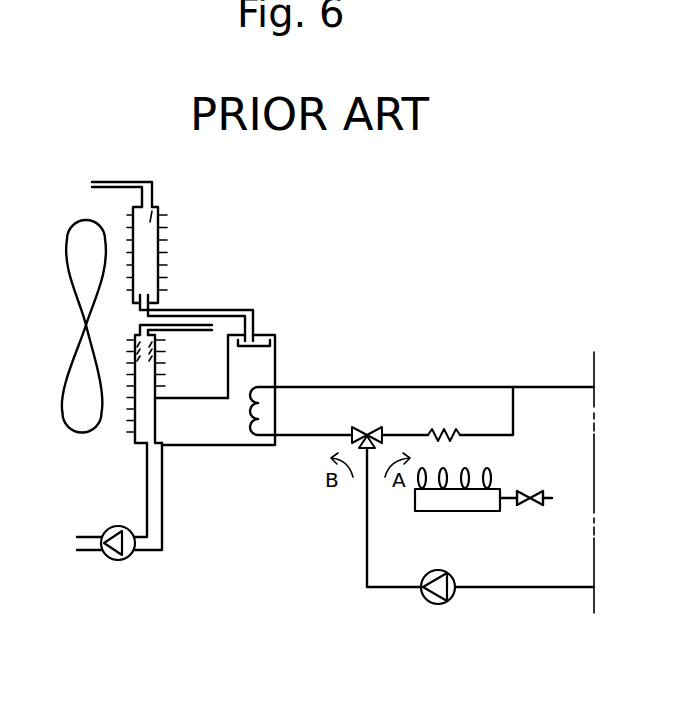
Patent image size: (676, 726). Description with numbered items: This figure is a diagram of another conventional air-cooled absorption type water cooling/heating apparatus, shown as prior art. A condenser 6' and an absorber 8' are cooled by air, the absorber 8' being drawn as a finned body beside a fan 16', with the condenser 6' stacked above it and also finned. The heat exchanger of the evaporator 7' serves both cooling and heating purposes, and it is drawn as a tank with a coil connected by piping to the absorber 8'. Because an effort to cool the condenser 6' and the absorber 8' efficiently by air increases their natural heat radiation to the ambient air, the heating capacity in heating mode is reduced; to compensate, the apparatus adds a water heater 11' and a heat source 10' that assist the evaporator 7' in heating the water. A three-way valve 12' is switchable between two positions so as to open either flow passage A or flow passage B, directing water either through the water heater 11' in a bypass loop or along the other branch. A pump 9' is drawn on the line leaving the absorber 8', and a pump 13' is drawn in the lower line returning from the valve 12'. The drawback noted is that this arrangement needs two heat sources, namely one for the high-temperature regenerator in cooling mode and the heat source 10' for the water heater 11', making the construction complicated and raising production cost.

The condenser 6' is at (172, 261).
The evaporator 7' is at (241, 378).
The absorber 8' is at (161, 401).
The pump 9' is at (123, 574).
The heat source 10' is at (467, 517).
The water heater 11' is at (445, 418).
The three-way valve 12' is at (374, 423).
The pump 13' is at (439, 608).
The fan 16' is at (76, 348).